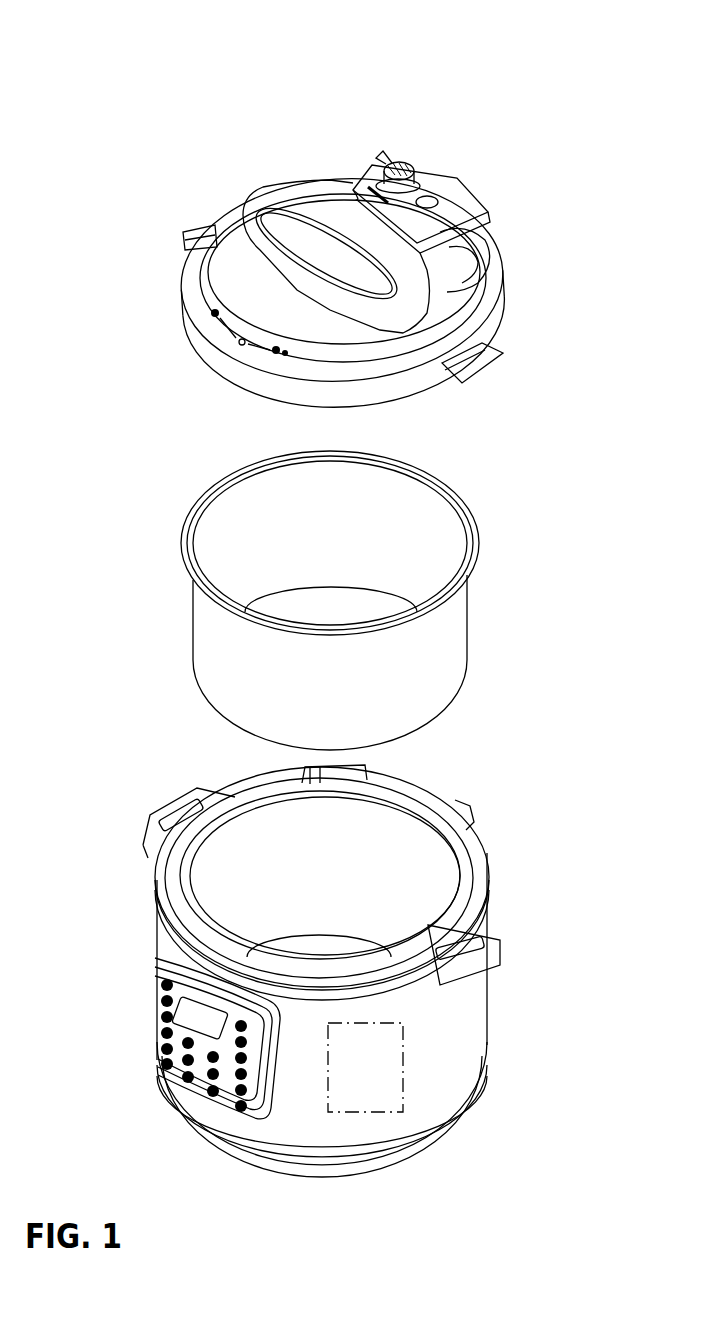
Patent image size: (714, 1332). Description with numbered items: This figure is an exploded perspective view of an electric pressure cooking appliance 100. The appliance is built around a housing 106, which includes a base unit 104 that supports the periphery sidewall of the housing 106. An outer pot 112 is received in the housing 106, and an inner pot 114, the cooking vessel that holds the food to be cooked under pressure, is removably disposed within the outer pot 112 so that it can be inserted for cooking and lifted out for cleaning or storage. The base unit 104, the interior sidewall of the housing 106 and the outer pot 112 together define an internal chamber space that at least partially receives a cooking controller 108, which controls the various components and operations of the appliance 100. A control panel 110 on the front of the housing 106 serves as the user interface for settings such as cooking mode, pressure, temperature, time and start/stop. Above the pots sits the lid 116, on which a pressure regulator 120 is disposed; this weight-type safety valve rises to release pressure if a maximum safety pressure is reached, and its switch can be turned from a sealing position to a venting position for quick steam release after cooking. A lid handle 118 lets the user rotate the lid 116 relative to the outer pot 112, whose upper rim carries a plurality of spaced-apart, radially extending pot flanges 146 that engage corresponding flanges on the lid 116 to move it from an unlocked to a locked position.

The pressure cooking appliance 100 is at (341, 103).
The base unit 104 is at (397, 1150).
The housing 106 is at (470, 1048).
The cooking controller 108 is at (368, 1112).
The control panel 110 is at (168, 1020).
The outer pot 112 is at (437, 858).
The inner pot 114 is at (427, 681).
The lid 116 is at (500, 312).
The lid handle 118 is at (276, 190).
The pressure regulator 120 is at (417, 187).
The pot flanges 146 is at (175, 872).